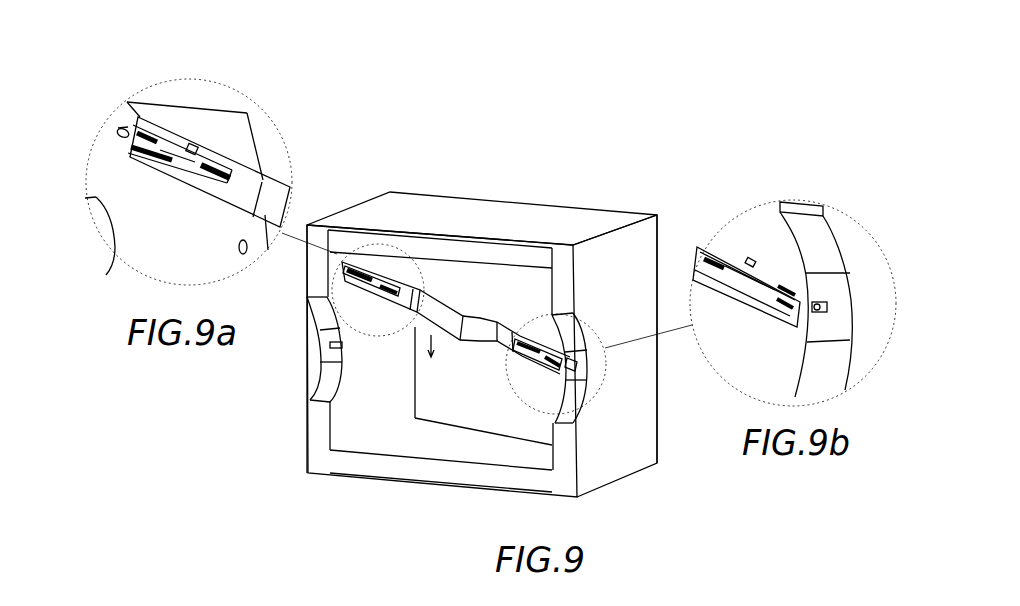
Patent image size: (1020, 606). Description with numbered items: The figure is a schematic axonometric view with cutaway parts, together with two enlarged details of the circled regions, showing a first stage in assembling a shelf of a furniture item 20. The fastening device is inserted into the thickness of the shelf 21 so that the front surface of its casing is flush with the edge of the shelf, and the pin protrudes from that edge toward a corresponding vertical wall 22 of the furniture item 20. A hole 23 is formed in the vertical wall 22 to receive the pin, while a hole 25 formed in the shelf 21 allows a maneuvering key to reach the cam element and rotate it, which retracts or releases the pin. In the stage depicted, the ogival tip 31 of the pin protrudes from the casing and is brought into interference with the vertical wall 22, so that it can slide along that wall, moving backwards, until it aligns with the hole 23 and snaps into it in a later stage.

In FIG. 9, the furniture item 20 is at (470, 192).
In FIG. 9, the shelf 21 is at (495, 308).
In FIG. 9, the vertical wall 22 is at (350, 415).
In FIG. 9B, the hole 23 is at (827, 305).
In FIG. 9A, the hole 25 is at (193, 150).
In FIG. 9A, the ogival tip 31 is at (121, 130).